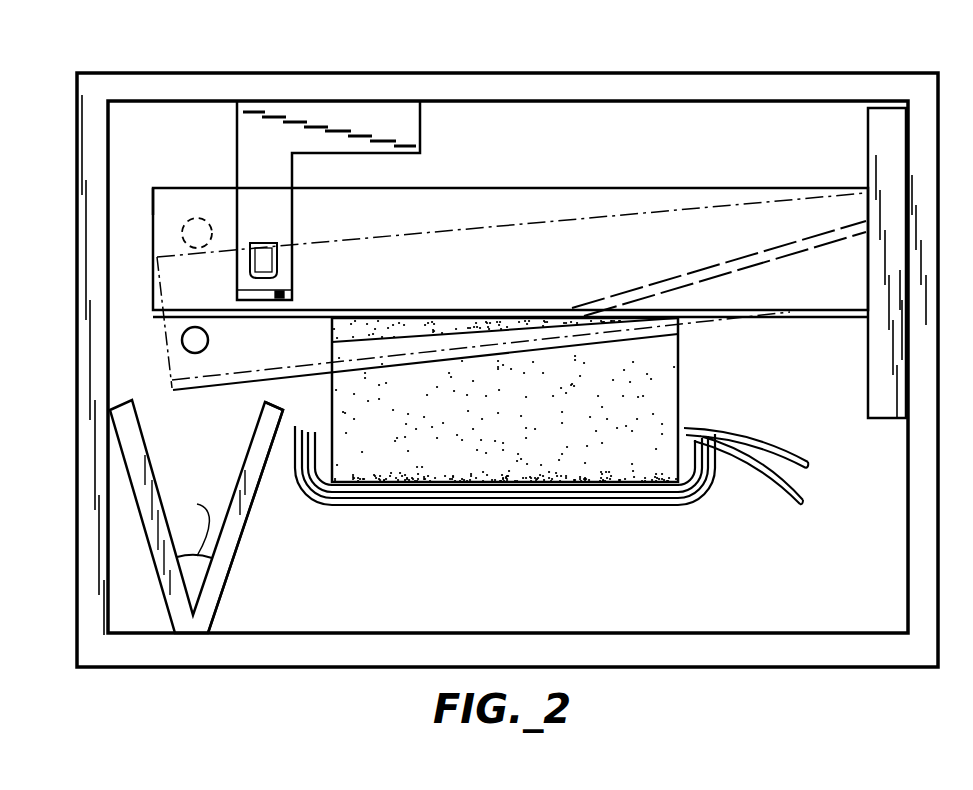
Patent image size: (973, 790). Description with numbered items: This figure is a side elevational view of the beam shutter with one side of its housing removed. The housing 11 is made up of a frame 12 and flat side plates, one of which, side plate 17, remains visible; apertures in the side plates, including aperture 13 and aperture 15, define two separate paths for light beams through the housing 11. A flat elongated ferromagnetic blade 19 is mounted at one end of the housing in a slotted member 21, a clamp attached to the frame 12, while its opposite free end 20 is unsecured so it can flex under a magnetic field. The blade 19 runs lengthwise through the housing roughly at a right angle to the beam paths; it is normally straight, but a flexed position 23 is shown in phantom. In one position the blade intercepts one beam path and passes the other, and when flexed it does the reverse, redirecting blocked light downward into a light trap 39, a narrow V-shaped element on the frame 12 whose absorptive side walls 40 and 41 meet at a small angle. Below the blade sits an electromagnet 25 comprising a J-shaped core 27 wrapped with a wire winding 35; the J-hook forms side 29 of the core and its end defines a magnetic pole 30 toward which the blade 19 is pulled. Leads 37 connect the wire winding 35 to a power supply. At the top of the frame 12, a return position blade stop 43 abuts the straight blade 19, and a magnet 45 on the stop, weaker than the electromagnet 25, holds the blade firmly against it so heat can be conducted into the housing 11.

The housing 11 is at (527, 75).
The frame 12 is at (926, 97).
The aperture 13 is at (197, 216).
The aperture 15 is at (210, 337).
The side plate 17 is at (541, 161).
The blade 19 is at (482, 195).
The free end 20 is at (156, 195).
The slotted member 21 is at (878, 135).
The flexed position 23 is at (247, 387).
The electromagnet 25 is at (561, 407).
The core 27 is at (487, 484).
The J-hook side 29 is at (541, 407).
The magnetic pole 30 is at (352, 326).
The wire winding 35 is at (670, 505).
The leads 37 is at (753, 443).
The light trap 39 is at (215, 480).
The side wall 40 is at (248, 490).
The side wall 41 is at (171, 600).
The return position blade stop 43 is at (405, 113).
The magnet 45 is at (268, 254).